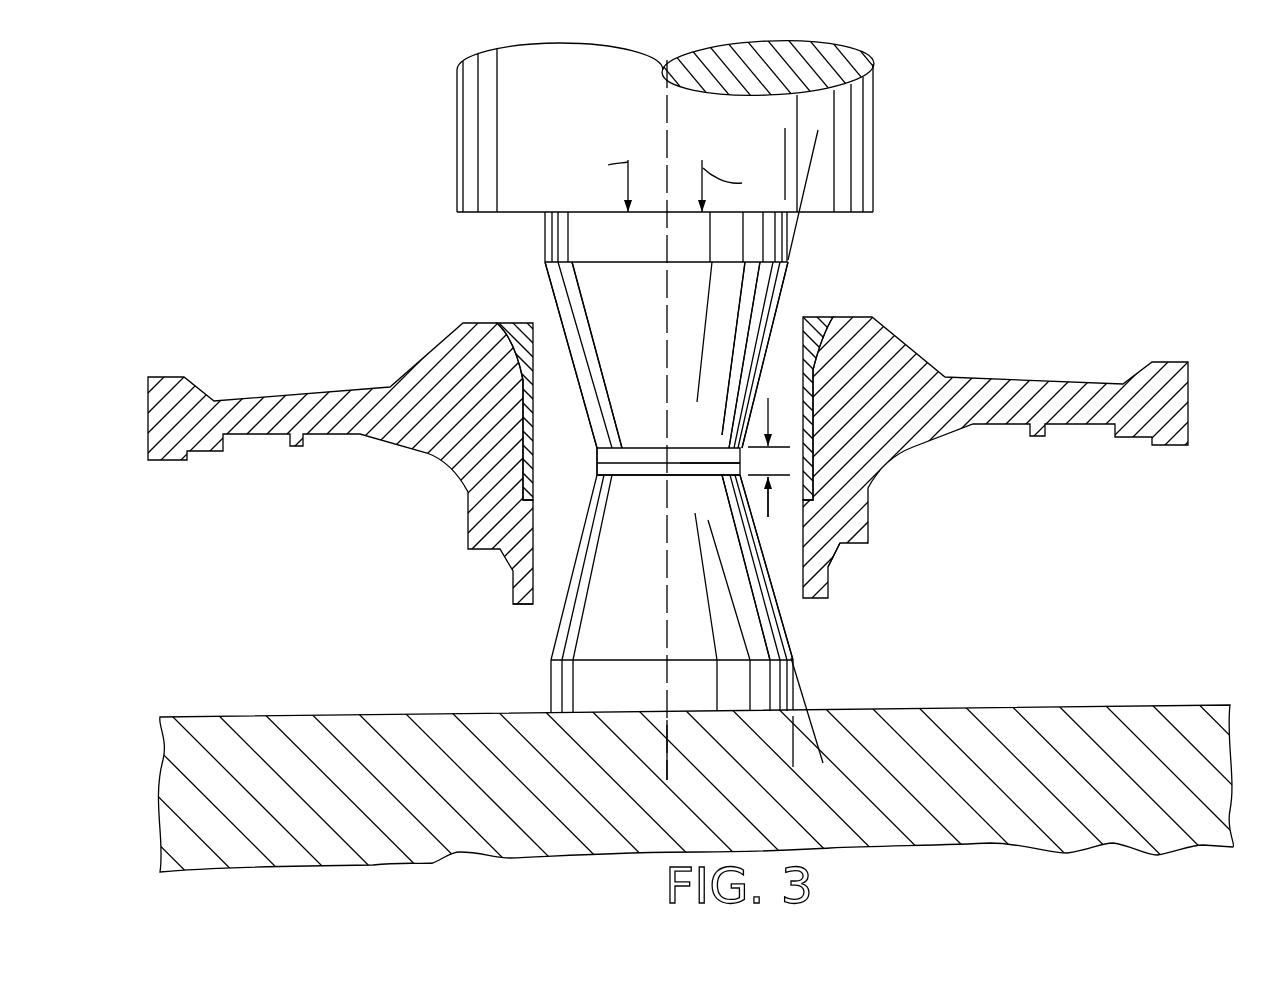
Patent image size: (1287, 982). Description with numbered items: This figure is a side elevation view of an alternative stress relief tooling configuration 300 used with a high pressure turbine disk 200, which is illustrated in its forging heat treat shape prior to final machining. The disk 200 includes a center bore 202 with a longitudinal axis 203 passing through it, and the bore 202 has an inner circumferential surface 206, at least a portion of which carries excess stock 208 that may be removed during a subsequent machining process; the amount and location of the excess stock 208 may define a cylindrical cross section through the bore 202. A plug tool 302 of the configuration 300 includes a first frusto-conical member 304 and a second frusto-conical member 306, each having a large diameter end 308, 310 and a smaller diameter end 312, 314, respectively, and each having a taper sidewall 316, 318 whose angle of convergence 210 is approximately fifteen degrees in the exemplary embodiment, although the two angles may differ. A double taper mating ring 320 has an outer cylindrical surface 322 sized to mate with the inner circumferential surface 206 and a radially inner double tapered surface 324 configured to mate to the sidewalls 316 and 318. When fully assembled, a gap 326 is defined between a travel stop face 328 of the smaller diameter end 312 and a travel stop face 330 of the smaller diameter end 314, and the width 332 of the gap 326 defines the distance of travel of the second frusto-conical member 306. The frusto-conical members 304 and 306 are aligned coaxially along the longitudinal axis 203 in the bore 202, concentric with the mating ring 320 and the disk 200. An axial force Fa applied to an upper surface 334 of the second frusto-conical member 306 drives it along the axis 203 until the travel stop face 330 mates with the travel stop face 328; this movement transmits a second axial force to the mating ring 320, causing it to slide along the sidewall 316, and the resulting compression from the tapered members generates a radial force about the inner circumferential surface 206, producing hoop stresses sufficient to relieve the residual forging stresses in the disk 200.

The high pressure turbine disk 200 is at (407, 400).
The center bore 202 is at (538, 632).
The longitudinal axis 203 is at (675, 730).
The inner circumferential surface 206 is at (518, 580).
The excess stock 208 is at (520, 337).
The angle of convergence 210 is at (857, 177).
The stress relief tooling configuration 300 is at (643, 463).
The plug tool 302 is at (688, 408).
The first frusto-conical member 304 is at (647, 625).
The second frusto-conical member 306 is at (651, 330).
The large diameter end 308 is at (771, 645).
The large diameter end 310 is at (785, 276).
The smaller diameter end 312 is at (739, 528).
The smaller diameter end 314 is at (733, 397).
The taper sidewall 316 is at (583, 517).
The taper sidewall 318 is at (583, 403).
The double taper mating ring 320 is at (780, 412).
The outer cylindrical surface 322 is at (830, 554).
The radially inner double tapered surface 324 is at (588, 425).
The gap 326 is at (630, 473).
The travel stop face 328 is at (676, 476).
The travel stop face 330 is at (684, 480).
The width 332 is at (770, 513).
The upper surface 334 is at (525, 213).